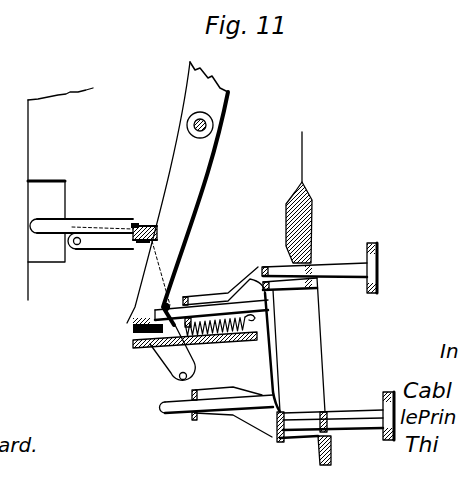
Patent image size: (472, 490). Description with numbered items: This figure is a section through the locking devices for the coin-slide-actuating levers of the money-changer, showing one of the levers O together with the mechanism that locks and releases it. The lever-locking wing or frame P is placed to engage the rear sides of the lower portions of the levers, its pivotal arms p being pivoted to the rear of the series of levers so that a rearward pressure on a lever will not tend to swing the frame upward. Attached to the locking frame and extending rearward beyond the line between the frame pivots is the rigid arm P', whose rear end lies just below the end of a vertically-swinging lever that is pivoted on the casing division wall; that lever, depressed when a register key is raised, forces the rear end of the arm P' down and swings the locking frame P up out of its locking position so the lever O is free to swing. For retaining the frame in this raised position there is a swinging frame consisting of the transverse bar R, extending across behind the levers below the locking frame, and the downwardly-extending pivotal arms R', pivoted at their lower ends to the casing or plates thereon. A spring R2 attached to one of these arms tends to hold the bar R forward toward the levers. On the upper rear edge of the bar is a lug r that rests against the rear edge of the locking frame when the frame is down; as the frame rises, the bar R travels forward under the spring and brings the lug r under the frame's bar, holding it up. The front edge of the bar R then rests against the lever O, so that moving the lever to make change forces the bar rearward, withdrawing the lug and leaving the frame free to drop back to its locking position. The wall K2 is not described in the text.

The frame wall K2 is at (55, 212).
The rigid arm P' is at (81, 214).
The lever-locking frame P is at (145, 219).
The pivotal arm p is at (91, 247).
The lug r is at (134, 226).
The transverse bar R is at (142, 272).
The lever O is at (199, 201).
The pivotal arm R' is at (184, 292).
The spring R2 is at (214, 338).